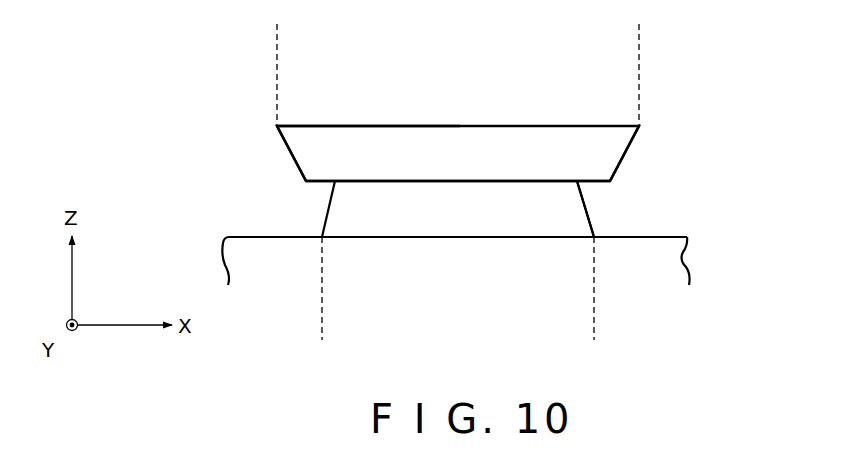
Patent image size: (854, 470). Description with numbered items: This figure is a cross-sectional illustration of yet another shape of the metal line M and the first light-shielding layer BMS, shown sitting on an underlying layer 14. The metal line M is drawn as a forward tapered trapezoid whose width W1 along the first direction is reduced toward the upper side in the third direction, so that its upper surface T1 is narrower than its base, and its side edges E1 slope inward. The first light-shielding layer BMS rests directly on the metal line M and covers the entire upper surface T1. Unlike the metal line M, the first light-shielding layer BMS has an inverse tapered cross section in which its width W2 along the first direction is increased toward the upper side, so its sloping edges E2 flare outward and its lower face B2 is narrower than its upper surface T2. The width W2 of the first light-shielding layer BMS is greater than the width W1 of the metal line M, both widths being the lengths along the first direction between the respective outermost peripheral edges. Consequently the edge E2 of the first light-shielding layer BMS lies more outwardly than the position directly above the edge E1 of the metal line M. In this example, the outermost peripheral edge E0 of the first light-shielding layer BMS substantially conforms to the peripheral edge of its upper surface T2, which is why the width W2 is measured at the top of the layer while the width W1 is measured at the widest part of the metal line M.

The substrate 14 is at (673, 266).
The metal line M is at (402, 225).
The first light-shielding layer BMS is at (518, 168).
The outermost peripheral edge E0 is at (272, 127).
The edge E1 is at (597, 210).
The edge E2 is at (634, 158).
The upper surface T1 is at (469, 176).
The upper surface T2 is at (338, 124).
The bottom surface B2 is at (317, 188).
The width W1 is at (590, 329).
The width W2 is at (637, 35).